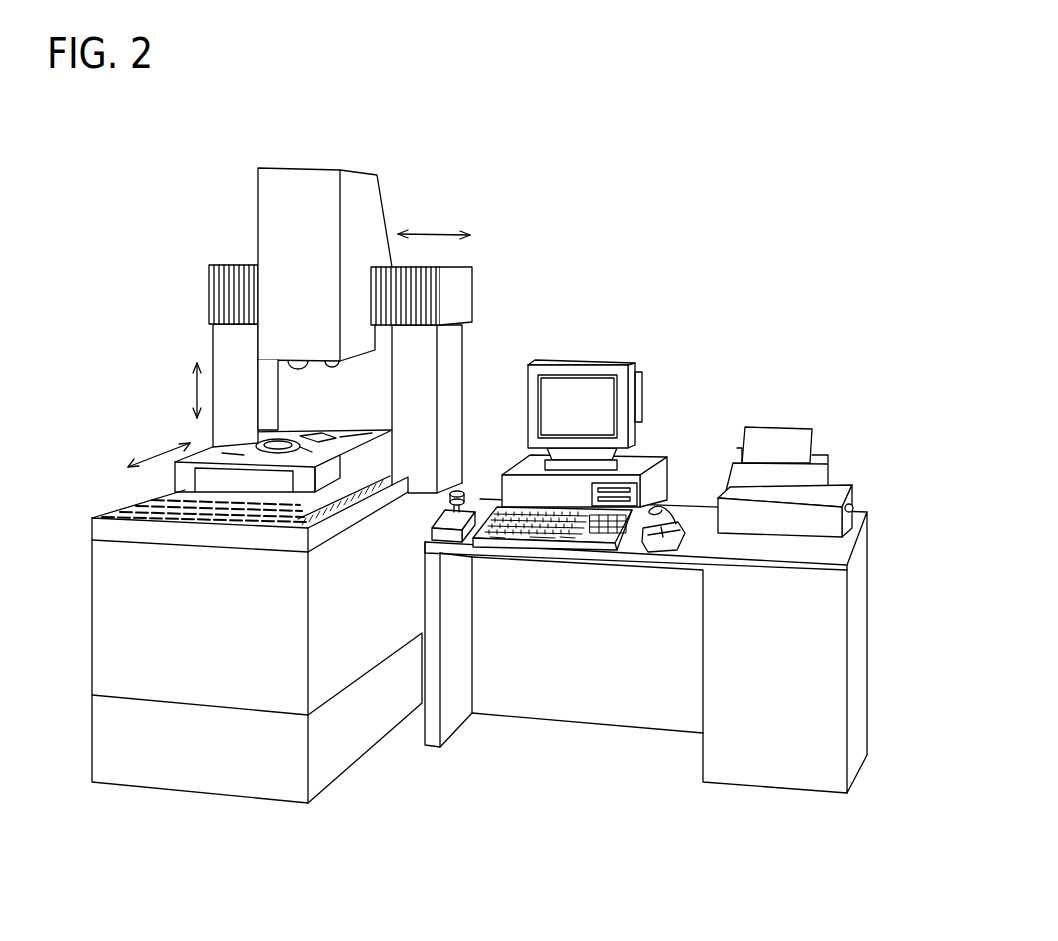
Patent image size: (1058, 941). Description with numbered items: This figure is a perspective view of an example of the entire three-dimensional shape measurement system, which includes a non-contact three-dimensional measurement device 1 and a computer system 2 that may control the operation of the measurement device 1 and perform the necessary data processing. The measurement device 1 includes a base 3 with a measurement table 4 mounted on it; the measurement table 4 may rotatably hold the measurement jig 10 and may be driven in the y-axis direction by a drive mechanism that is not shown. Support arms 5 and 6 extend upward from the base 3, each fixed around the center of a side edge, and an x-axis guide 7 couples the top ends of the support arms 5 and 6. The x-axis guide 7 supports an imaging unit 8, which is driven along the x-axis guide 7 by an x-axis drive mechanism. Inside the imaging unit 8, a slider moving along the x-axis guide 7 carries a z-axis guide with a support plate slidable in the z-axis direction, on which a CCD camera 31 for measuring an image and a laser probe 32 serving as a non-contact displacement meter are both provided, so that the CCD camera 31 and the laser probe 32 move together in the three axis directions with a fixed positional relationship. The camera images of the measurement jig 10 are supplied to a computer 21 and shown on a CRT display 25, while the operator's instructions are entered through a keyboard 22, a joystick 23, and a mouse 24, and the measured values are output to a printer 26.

The non-contact three-dimensional measurement device 1 is at (393, 141).
The computer system 2 is at (647, 351).
The base 3 is at (115, 512).
The measurement table 4 is at (210, 453).
The support arm 5 is at (213, 347).
The support arm 6 is at (455, 366).
The x-axis guide 7 is at (222, 265).
The imaging unit 8 is at (258, 182).
The measurement jig 10 is at (257, 437).
The computer 21 is at (650, 460).
The keyboard 22 is at (550, 541).
The joystick 23 is at (433, 519).
The mouse 24 is at (655, 543).
The CRT display 25 is at (632, 400).
The printer 26 is at (802, 408).
The CCD camera 31 is at (298, 368).
The laser probe 32 is at (333, 367).